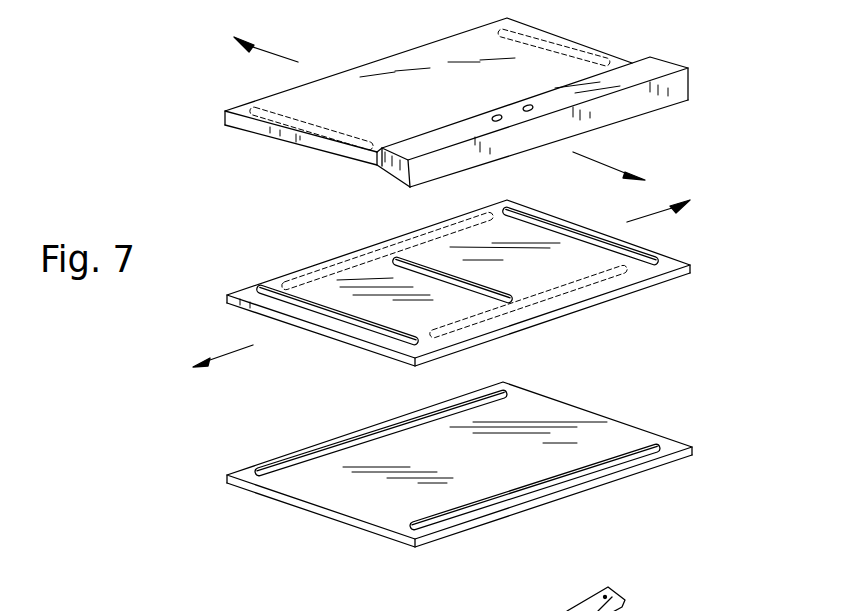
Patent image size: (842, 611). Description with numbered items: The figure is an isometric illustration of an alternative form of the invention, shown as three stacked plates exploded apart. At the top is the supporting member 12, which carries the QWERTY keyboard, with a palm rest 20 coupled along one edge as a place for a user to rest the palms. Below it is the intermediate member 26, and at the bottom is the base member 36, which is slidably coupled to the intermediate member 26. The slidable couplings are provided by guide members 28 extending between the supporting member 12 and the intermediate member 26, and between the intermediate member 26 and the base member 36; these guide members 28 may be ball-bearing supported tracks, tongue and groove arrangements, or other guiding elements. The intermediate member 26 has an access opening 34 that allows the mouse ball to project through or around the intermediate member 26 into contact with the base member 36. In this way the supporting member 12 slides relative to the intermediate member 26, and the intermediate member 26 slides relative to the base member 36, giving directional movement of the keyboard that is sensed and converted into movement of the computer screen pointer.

The supporting member 12 is at (317, 143).
The palm rest 20 is at (677, 88).
The intermediate member 26 is at (310, 323).
The guide members 28 is at (265, 118).
The access opening 34 is at (510, 297).
The base member 36 is at (288, 500).